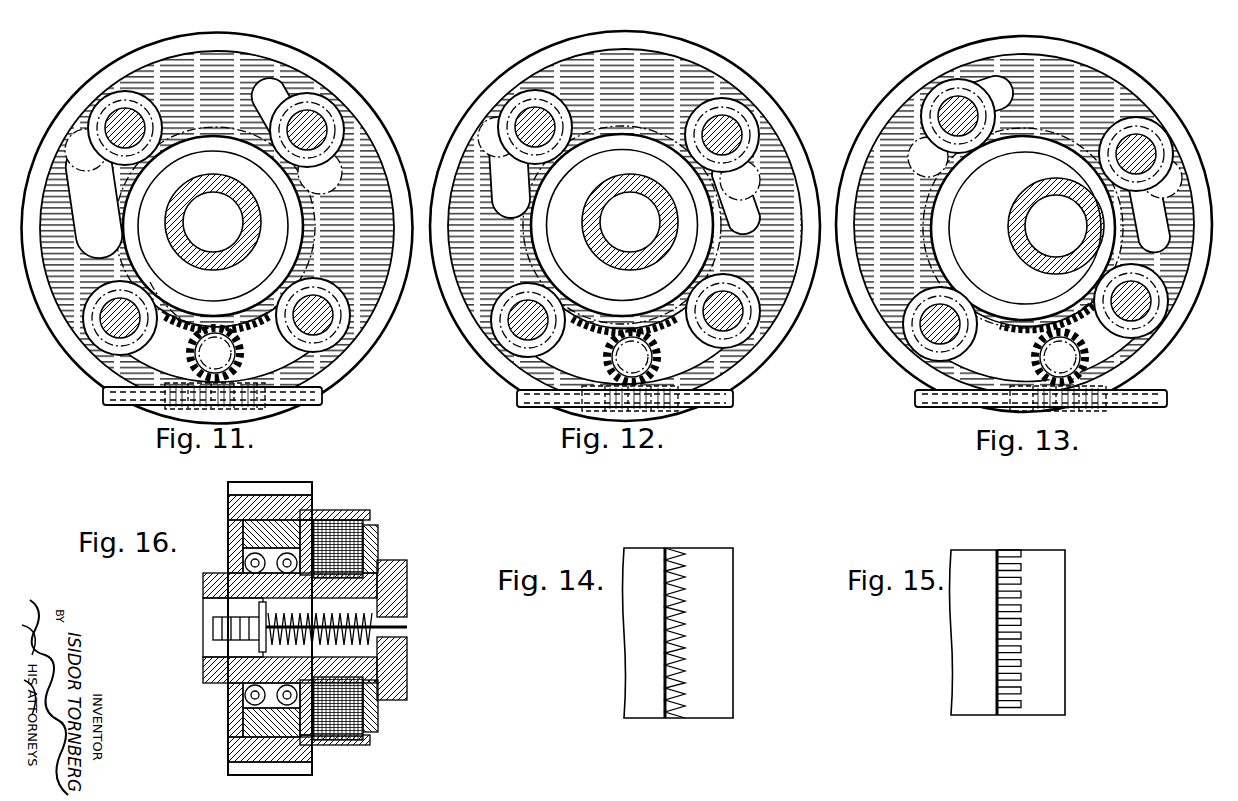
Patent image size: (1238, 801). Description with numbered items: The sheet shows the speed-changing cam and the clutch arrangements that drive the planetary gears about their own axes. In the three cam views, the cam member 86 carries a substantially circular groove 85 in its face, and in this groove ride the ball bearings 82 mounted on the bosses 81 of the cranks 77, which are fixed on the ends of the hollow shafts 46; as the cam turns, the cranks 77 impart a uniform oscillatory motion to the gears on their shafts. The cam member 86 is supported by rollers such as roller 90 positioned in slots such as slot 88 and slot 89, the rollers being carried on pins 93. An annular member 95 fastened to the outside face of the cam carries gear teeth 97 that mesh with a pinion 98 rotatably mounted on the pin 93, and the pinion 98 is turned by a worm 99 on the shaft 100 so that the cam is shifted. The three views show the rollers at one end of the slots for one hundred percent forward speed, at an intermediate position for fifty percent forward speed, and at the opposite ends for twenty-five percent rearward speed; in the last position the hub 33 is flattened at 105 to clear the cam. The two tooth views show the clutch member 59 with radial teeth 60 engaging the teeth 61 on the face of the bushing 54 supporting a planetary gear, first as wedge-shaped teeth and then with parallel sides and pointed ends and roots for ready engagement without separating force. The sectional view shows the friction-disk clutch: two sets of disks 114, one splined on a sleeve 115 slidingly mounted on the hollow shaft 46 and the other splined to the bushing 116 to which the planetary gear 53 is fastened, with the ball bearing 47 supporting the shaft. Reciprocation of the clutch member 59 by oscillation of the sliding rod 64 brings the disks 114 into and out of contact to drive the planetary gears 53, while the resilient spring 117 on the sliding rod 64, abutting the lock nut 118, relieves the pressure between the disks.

In FIG. 11, the hub 33 is at (229, 266).
In FIG. 12, the hub 33 is at (617, 268).
In FIG. 13, the hub 33 is at (1028, 276).
In FIG. 16, the hollow shaft 46 is at (210, 603).
In FIG. 16, the ball bearing 47 is at (247, 695).
In FIG. 16, the planetary gear 53 is at (228, 500).
In FIG. 14, the bushing 54 is at (640, 632).
In FIG. 15, the bushing 54 is at (968, 630).
In FIG. 16, the clutch member 59 is at (378, 547).
In FIG. 14, the clutch member 59 is at (730, 604).
In FIG. 15, the clutch member 59 is at (1055, 604).
In FIG. 14, the radial teeth 60 is at (682, 565).
In FIG. 15, the radial teeth 60 is at (1012, 570).
In FIG. 14, the teeth 61 is at (672, 556).
In FIG. 15, the teeth 61 is at (1005, 560).
In FIG. 16, the sliding rod 64 is at (382, 630).
In FIG. 11, the crank 77 is at (368, 195).
In FIG. 12, the crank 77 is at (740, 335).
In FIG. 13, the crank 77 is at (1140, 322).
In FIG. 11, the boss 81 is at (112, 326).
In FIG. 12, the boss 81 is at (752, 318).
In FIG. 13, the boss 81 is at (928, 340).
In FIG. 11, the ball bearing 82 is at (345, 325).
In FIG. 12, the ball bearing 82 is at (760, 300).
In FIG. 13, the ball bearing 82 is at (920, 318).
In FIG. 11, the groove 85 is at (243, 58).
In FIG. 12, the groove 85 is at (703, 80).
In FIG. 13, the groove 85 is at (1125, 102).
In FIG. 11, the cam member 86 is at (330, 50).
In FIG. 12, the cam member 86 is at (768, 94).
In FIG. 13, the cam member 86 is at (1176, 112).
In FIG. 11, the slot 88 is at (93, 193).
In FIG. 12, the slot 88 is at (498, 173).
In FIG. 13, the slot 88 is at (973, 126).
In FIG. 11, the slot 89 is at (298, 85).
In FIG. 12, the slot 89 is at (742, 205).
In FIG. 13, the slot 89 is at (1168, 285).
In FIG. 11, the roller 90 is at (318, 378).
In FIG. 12, the roller 90 is at (705, 358).
In FIG. 13, the roller 90 is at (978, 388).
In FIG. 11, the pin 93 is at (190, 347).
In FIG. 12, the pin 93 is at (492, 150).
In FIG. 13, the pin 93 is at (1150, 226).
In FIG. 11, the annular member 95 is at (325, 238).
In FIG. 11, the gear teeth 97 is at (232, 353).
In FIG. 12, the pinion 98 is at (650, 357).
In FIG. 12, the worm 99 is at (668, 410).
In FIG. 11, the shaft 100 is at (300, 405).
In FIG. 11, the flattened portion 105 is at (228, 222).
In FIG. 13, the flattened portion 105 is at (1056, 226).
In FIG. 16, the disks 114 is at (338, 522).
In FIG. 16, the sleeve 115 is at (408, 583).
In FIG. 16, the bushing 116 is at (372, 512).
In FIG. 16, the resilient spring 117 is at (408, 656).
In FIG. 16, the lock nut 118 is at (215, 646).